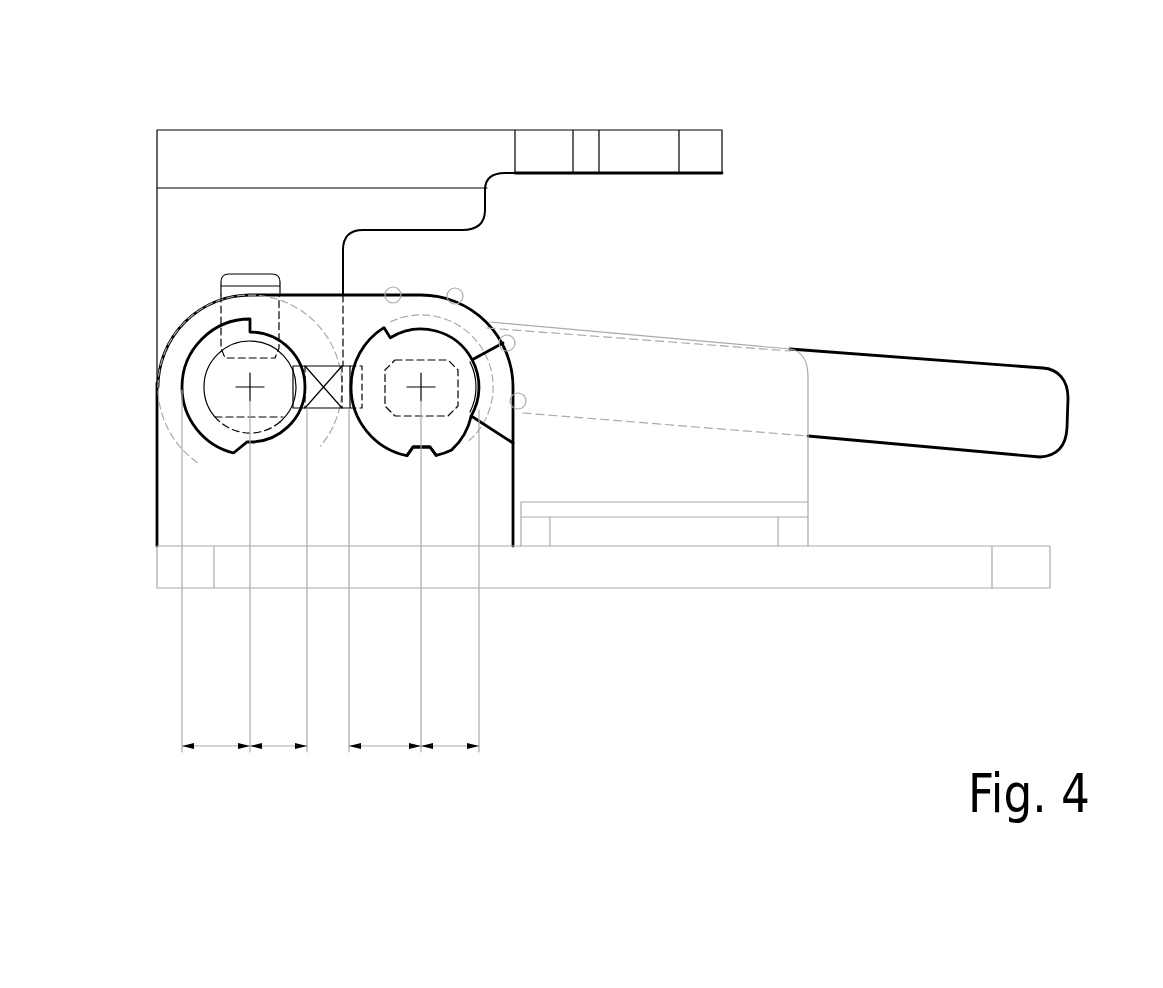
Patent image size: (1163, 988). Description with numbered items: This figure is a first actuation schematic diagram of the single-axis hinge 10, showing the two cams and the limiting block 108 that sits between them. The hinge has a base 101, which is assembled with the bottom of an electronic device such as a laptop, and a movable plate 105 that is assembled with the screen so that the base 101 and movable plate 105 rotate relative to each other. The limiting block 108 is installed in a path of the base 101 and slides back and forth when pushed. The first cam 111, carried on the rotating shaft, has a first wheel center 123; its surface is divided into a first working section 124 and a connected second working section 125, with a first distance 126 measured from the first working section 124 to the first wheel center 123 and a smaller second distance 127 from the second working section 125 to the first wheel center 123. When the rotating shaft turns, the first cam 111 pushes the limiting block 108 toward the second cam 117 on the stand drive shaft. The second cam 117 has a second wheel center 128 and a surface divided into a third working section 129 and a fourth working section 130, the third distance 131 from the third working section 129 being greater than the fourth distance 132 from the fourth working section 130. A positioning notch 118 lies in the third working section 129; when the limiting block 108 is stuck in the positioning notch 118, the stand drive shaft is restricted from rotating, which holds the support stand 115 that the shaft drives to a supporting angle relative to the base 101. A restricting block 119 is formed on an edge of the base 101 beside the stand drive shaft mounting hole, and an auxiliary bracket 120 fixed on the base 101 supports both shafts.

The single-axis hinge 10 is at (1142, 98).
The base 101 is at (782, 567).
The movable plate 105 is at (723, 148).
The limiting block 108 is at (327, 362).
The first cam 111 is at (197, 362).
The support stand 115 is at (965, 377).
The second cam 117 is at (443, 435).
The positioning notch 118 is at (425, 462).
The restricting block 119 is at (505, 380).
The auxiliary bracket 120 is at (808, 477).
The first wheel center 123 is at (247, 388).
The first working section 124 is at (185, 302).
The second working section 125 is at (260, 297).
The first distance 126 is at (216, 731).
The second distance 127 is at (278, 731).
The second wheel center 128 is at (425, 372).
The third working section 129 is at (380, 325).
The fourth working section 130 is at (437, 352).
The third distance 131 is at (385, 731).
The fourth distance 132 is at (450, 731).